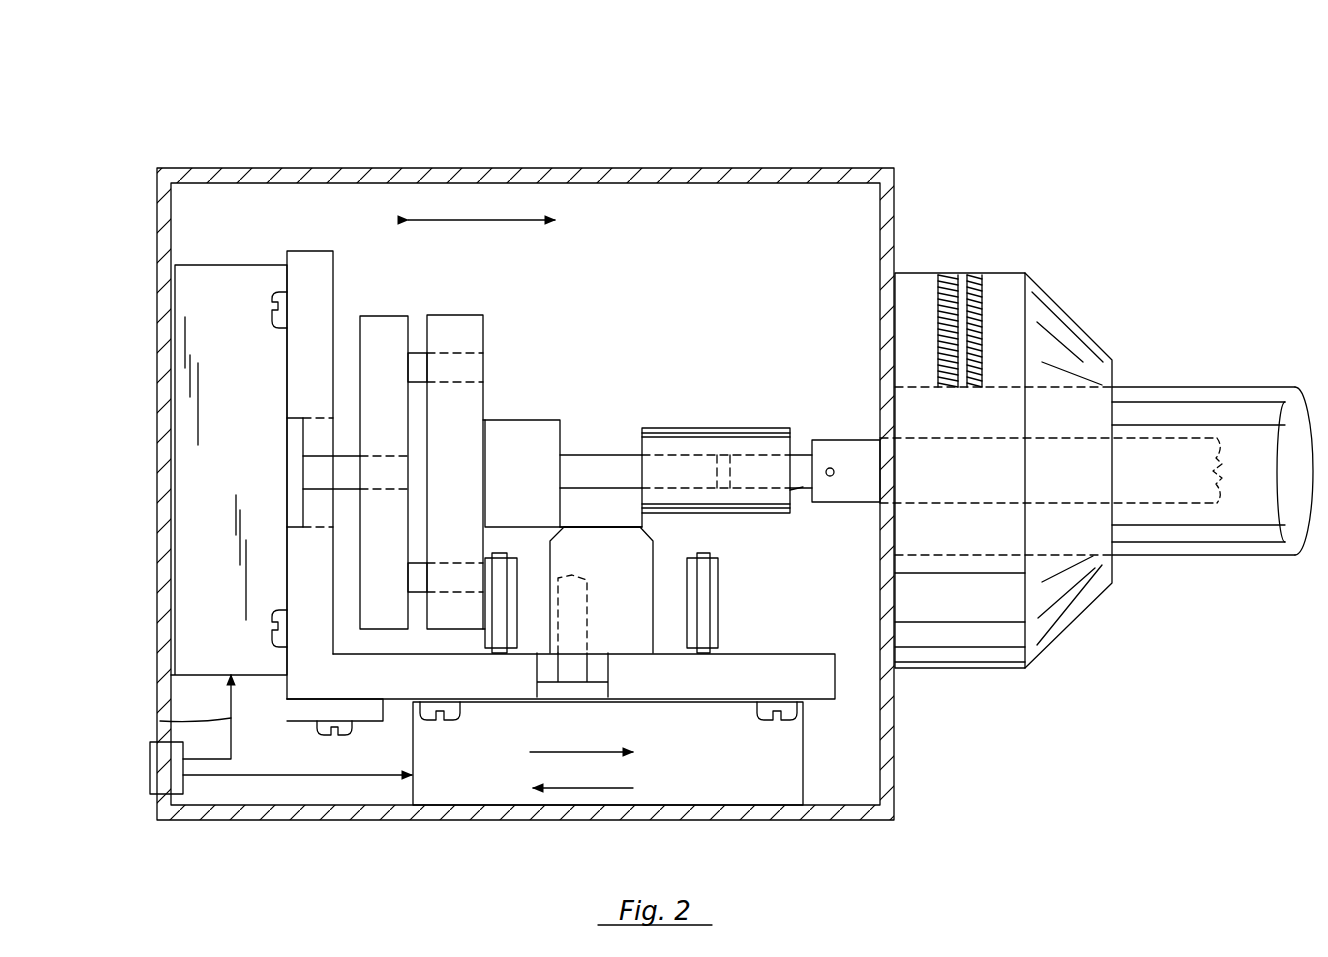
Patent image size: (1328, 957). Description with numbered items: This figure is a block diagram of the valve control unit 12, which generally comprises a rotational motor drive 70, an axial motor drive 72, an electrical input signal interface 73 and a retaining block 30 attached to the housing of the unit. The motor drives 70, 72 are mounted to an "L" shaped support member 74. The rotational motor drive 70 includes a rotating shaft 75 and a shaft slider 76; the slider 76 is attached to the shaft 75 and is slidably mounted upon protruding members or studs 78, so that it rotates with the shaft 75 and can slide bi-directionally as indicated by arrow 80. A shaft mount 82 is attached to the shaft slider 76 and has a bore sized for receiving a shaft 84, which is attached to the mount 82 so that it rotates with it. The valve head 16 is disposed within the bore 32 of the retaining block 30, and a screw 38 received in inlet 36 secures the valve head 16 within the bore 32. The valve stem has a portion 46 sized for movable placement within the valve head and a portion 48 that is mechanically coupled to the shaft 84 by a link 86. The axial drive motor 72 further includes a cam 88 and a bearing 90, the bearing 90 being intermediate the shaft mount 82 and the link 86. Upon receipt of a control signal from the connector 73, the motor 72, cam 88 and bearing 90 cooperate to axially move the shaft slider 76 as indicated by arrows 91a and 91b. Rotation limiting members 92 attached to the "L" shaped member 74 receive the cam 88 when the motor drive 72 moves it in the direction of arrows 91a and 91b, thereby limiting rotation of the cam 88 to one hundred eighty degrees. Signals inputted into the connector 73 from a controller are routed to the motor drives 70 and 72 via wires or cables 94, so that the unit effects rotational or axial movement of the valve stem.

The valve control unit 12 is at (582, 145).
The valve head 16 is at (1222, 390).
The retaining block 30 is at (1043, 298).
The bore 32 is at (1052, 385).
The inlet 36 is at (942, 323).
The screw 38 is at (967, 273).
The valve stem portion 46 is at (833, 430).
The valve stem portion 48 is at (803, 485).
The rotational motor drive 70 is at (185, 452).
The axial motor drive 72 is at (485, 792).
The electrical input signal interface 73 is at (152, 788).
The "L" shaped support member 74 is at (308, 268).
The rotating shaft 75 is at (347, 455).
The shaft slider 76 is at (470, 320).
The protruding members or studs 78 is at (417, 355).
The arrow 80 is at (500, 221).
The shaft mount 82 is at (533, 427).
The shaft 84 is at (597, 393).
The link 86 is at (687, 430).
The cam 88 is at (640, 633).
The bearing 90 is at (620, 513).
The arrow 91a is at (575, 752).
The arrow 91b is at (600, 787).
The rotation limiting members 92 is at (705, 597).
The wires or cables 94 is at (160, 721).